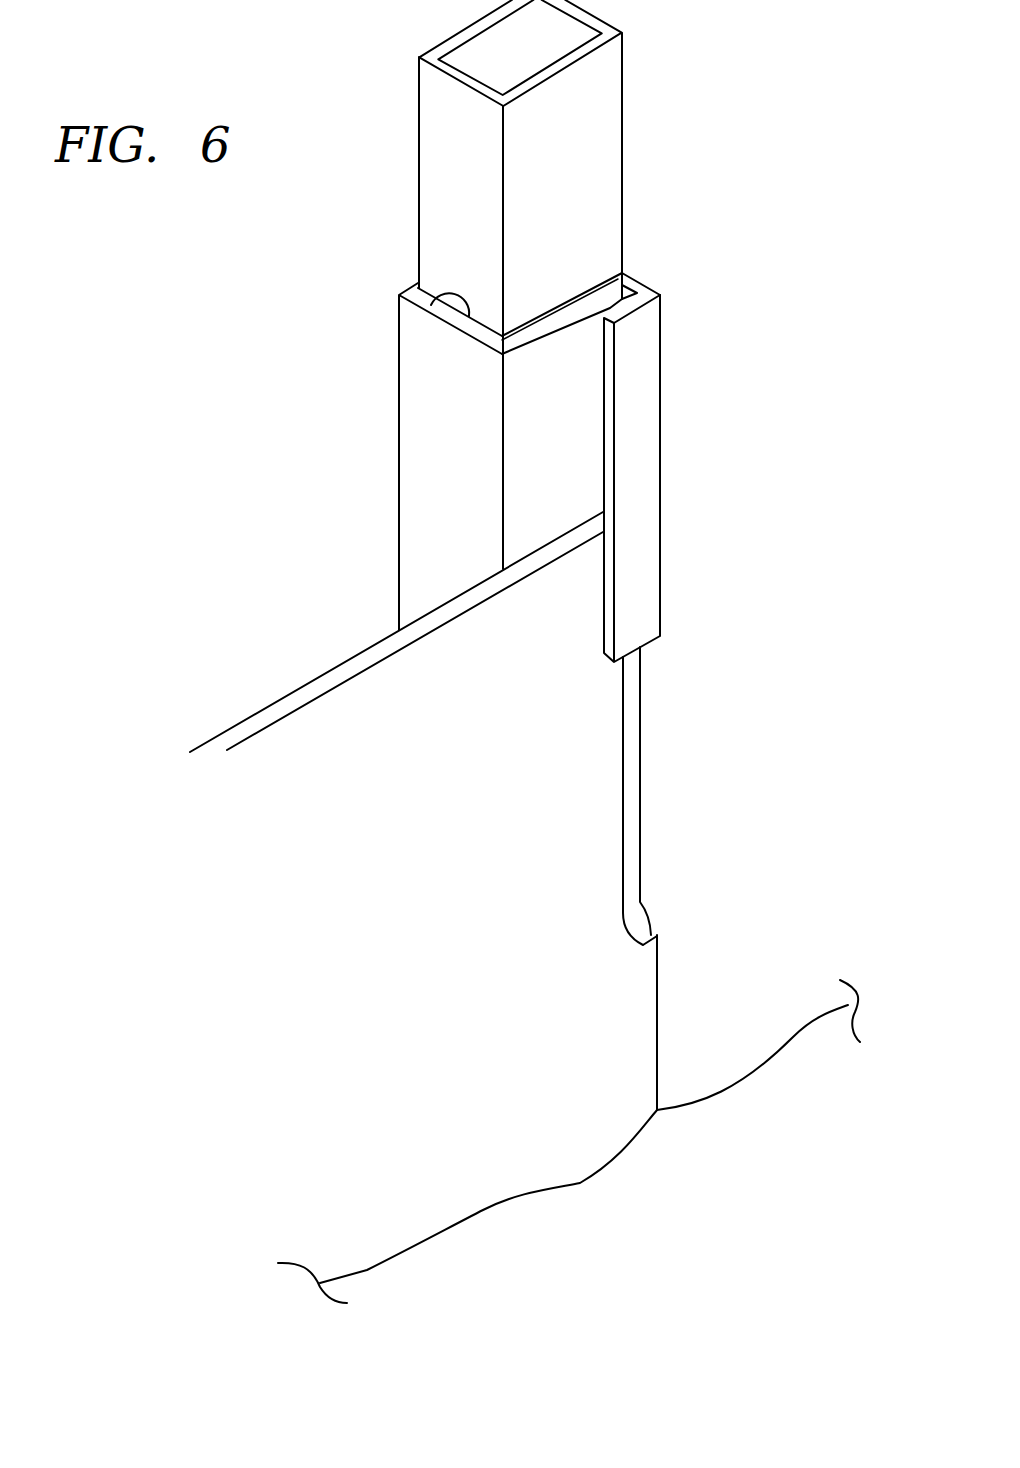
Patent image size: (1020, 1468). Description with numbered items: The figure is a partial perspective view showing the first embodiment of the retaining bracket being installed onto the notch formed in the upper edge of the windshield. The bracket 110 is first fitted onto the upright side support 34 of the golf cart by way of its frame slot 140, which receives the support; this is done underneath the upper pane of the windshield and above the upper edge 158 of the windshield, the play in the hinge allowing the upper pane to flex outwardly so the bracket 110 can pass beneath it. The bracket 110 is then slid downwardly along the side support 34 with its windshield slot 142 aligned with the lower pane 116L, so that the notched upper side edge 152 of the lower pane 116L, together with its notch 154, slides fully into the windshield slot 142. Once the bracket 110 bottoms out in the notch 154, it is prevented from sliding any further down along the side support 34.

The side support 34 is at (623, 193).
The frame slot 140 is at (440, 297).
The windshield slot 142 is at (580, 321).
The bracket 110 is at (643, 407).
The upper edge 158 is at (350, 662).
The notch 154 is at (628, 815).
The upper opposing edge 152 is at (660, 1011).
The lower pane 116L is at (457, 1120).